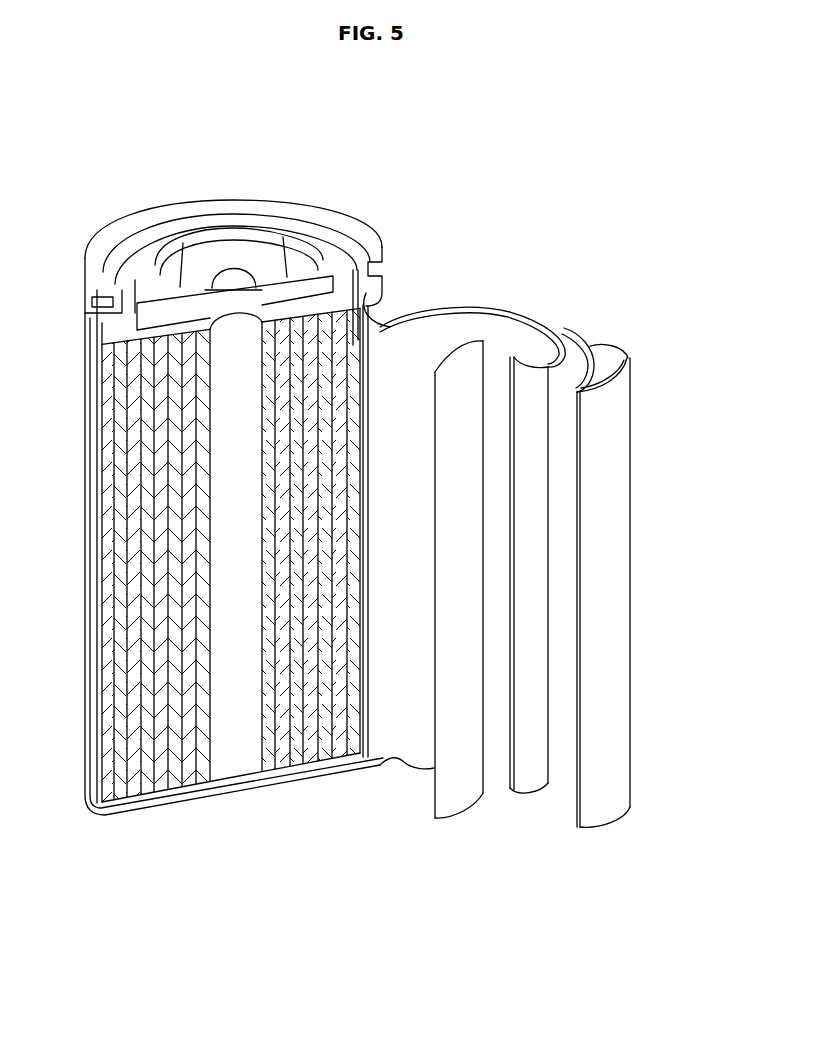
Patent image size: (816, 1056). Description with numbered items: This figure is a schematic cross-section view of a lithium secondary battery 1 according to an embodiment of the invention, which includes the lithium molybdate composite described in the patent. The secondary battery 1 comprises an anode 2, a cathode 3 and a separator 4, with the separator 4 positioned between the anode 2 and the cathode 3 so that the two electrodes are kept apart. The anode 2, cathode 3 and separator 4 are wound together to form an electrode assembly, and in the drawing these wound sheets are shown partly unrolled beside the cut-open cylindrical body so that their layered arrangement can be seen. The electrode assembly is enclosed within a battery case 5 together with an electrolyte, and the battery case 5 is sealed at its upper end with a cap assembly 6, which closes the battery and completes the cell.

The secondary battery 1 is at (605, 282).
The anode 2 is at (613, 458).
The cathode 3 is at (531, 368).
The separator 4 is at (591, 368).
The battery case 5 is at (88, 743).
The cap assembly 6 is at (244, 232).